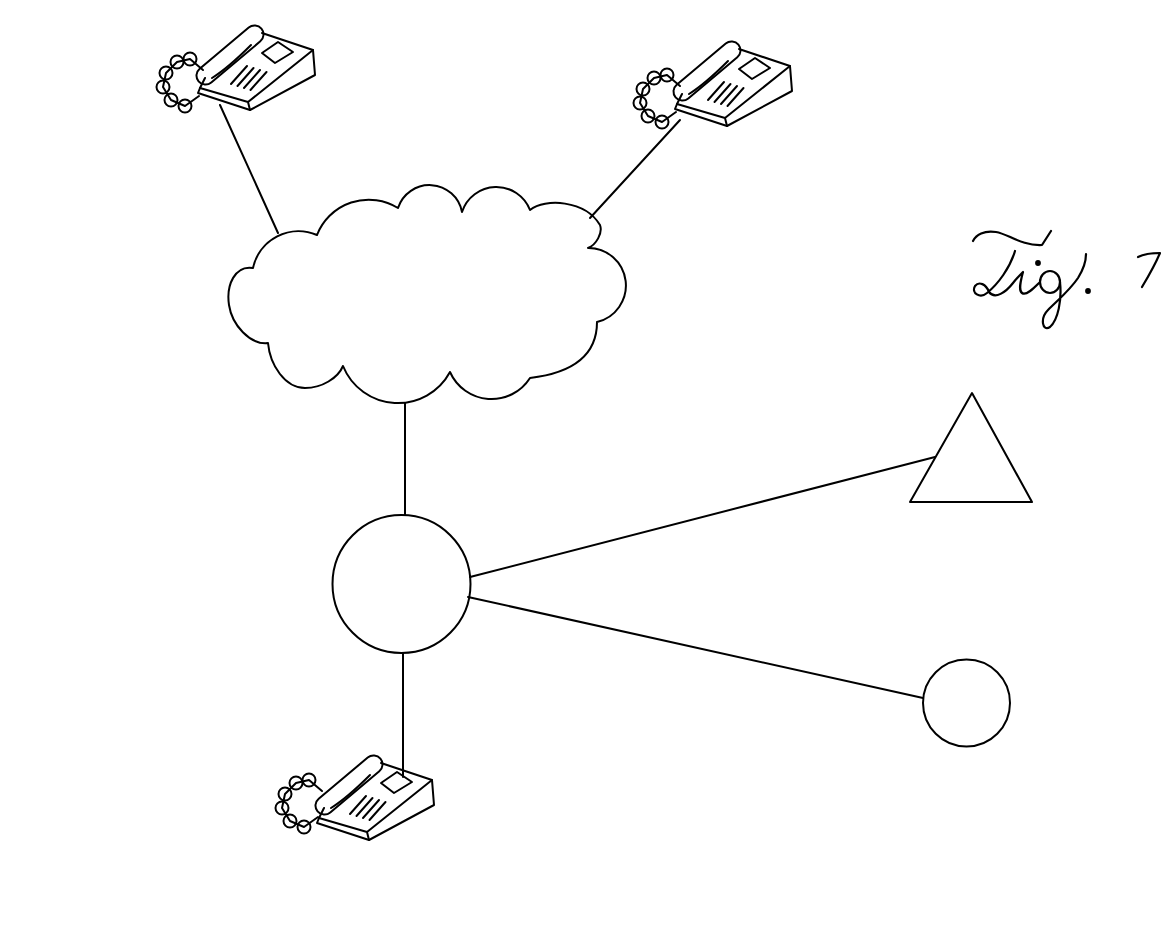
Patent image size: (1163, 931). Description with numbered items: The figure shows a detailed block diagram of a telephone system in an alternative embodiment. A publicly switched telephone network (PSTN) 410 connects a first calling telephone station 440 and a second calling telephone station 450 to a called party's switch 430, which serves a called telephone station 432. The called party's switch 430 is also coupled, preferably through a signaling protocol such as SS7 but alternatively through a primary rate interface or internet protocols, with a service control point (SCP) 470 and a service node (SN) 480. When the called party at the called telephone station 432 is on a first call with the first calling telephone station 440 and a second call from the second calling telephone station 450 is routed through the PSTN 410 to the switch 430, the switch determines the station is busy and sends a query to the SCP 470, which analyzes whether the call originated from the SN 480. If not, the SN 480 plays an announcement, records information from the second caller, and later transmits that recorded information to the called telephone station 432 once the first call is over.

The publicly switched telephone network (PSTN) 410 is at (623, 290).
The called party's switch 430 is at (333, 580).
The called telephone station 432 is at (435, 795).
The first calling telephone station 440 is at (318, 60).
The second calling telephone station 450 is at (797, 80).
The service control point (SCP) 470 is at (1003, 443).
The service node (SN) 480 is at (1010, 687).